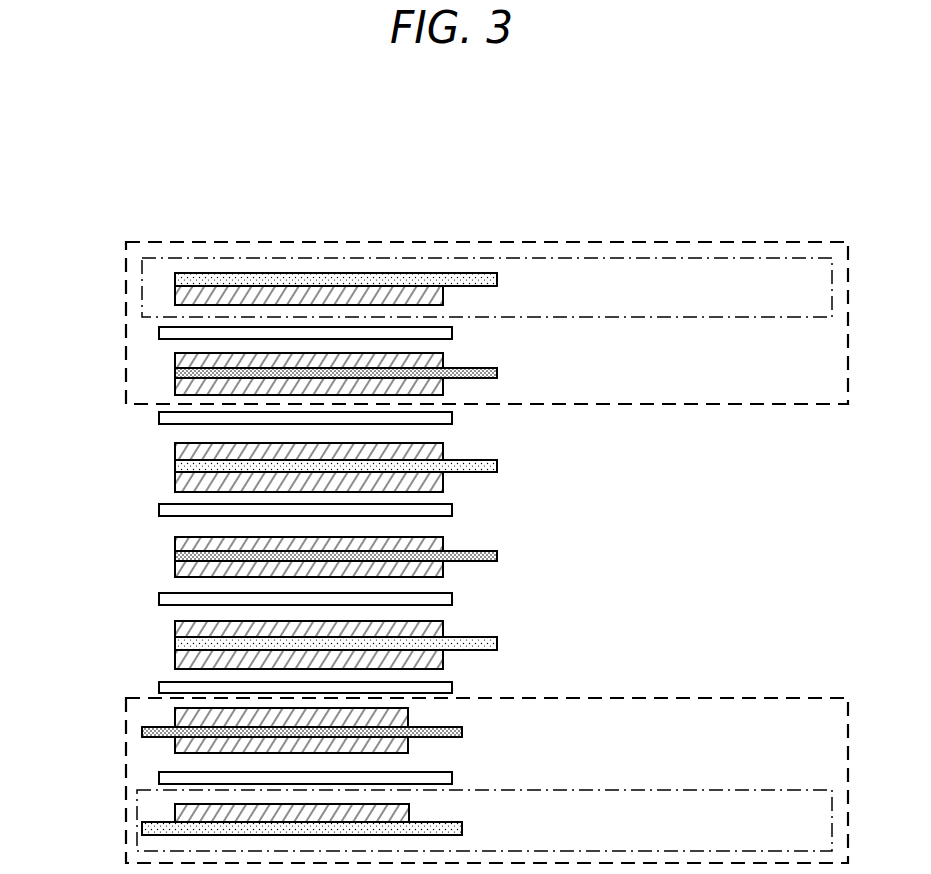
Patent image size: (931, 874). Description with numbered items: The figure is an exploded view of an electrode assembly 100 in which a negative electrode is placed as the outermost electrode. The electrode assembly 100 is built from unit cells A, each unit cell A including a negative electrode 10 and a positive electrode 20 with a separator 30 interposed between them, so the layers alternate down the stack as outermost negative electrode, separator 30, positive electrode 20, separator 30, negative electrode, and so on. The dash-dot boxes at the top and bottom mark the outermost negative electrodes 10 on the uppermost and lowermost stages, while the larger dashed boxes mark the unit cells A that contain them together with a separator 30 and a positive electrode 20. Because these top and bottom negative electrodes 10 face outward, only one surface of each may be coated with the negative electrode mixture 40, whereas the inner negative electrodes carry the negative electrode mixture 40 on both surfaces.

The electrode assembly 100 is at (222, 143).
The negative electrode 10 is at (175, 277).
The positive electrode 20 is at (175, 372).
The separator 30 is at (159, 333).
The negative electrode mixture 40 is at (175, 451).
The unit cell A is at (785, 242).